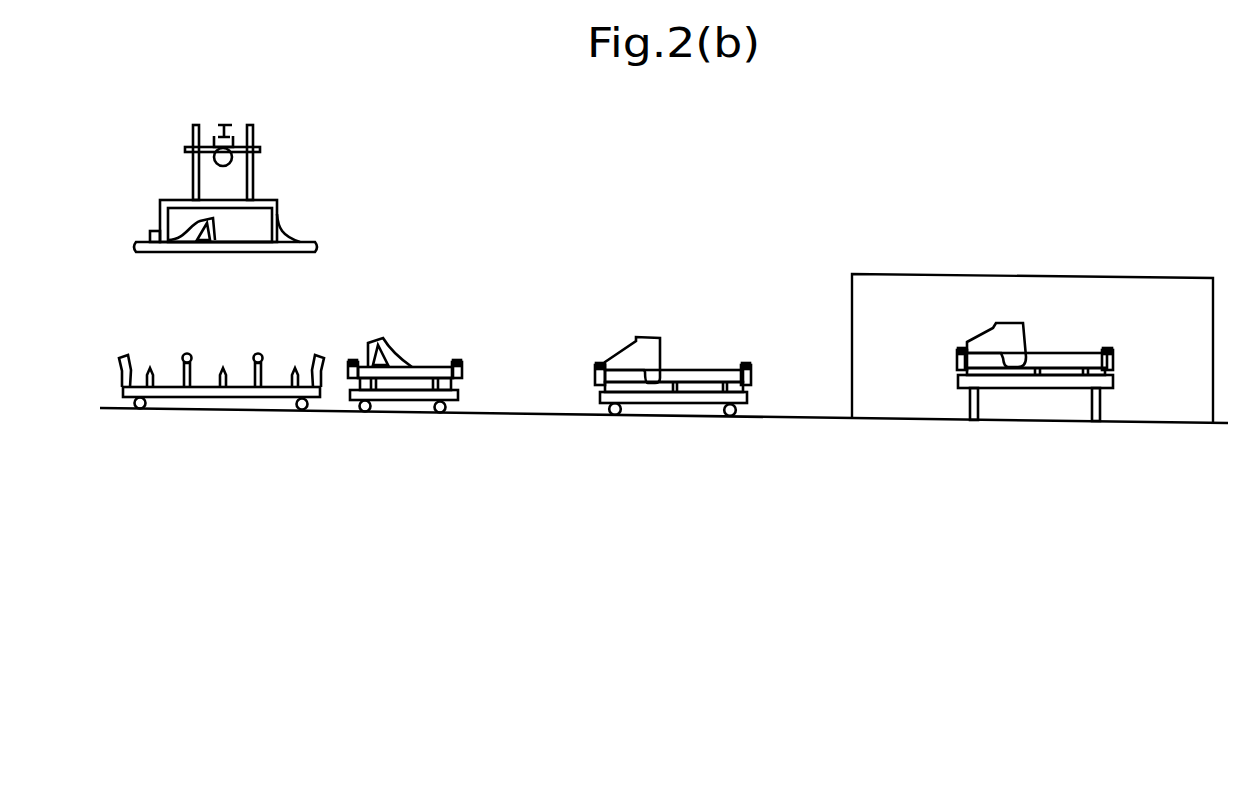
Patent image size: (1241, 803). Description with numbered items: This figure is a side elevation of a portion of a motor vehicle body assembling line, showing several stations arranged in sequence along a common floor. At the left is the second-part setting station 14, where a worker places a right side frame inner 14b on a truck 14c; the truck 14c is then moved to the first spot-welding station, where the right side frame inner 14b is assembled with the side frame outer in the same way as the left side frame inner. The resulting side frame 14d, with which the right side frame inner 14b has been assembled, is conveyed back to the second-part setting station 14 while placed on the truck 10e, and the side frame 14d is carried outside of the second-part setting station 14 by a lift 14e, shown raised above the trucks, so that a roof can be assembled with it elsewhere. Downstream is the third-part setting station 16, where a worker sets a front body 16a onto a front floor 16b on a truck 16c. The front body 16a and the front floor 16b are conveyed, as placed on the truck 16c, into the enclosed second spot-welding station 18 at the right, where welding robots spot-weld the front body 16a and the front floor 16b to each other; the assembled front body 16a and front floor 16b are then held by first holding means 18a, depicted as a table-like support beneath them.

The truck 10e is at (233, 397).
The second-part setting station 14 is at (330, 434).
The right side frame inner 14b is at (418, 363).
The truck 14c is at (398, 402).
The side frame 14d is at (295, 225).
The lift 14e is at (257, 172).
The third-part setting station 16 is at (681, 437).
The front body 16a is at (654, 338).
The front floor 16b is at (1070, 352).
The truck 16c is at (640, 403).
The second spot-welding station 18 is at (1038, 441).
The first holding means 18a is at (967, 393).